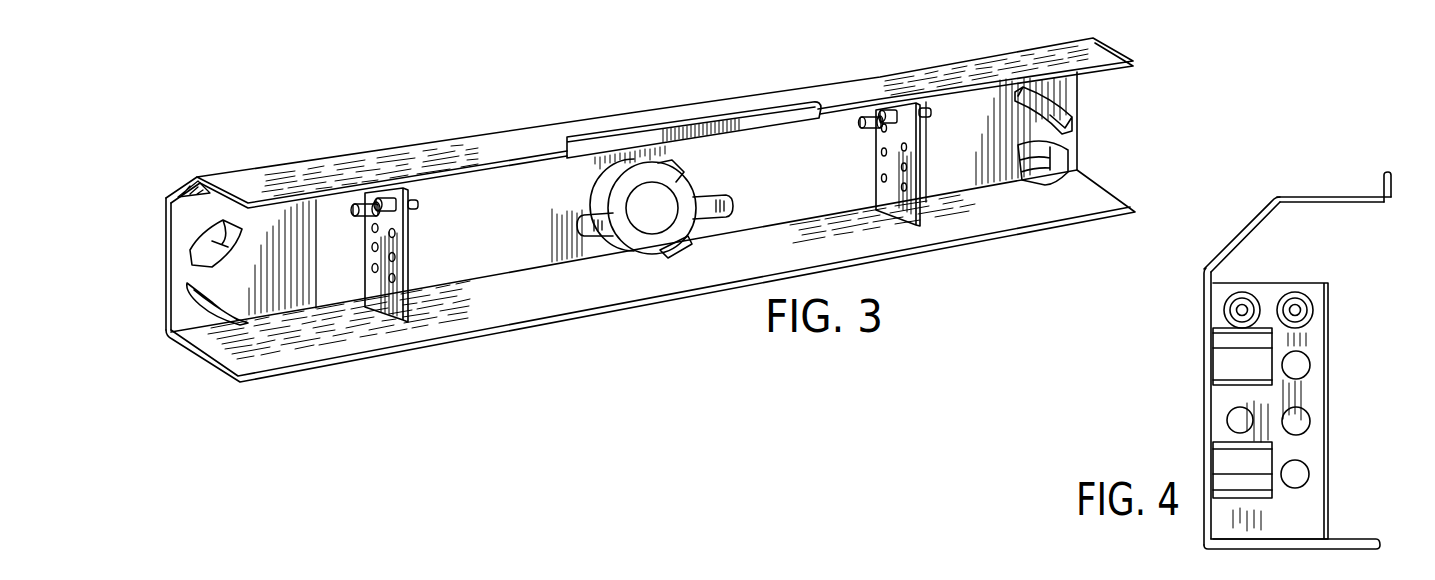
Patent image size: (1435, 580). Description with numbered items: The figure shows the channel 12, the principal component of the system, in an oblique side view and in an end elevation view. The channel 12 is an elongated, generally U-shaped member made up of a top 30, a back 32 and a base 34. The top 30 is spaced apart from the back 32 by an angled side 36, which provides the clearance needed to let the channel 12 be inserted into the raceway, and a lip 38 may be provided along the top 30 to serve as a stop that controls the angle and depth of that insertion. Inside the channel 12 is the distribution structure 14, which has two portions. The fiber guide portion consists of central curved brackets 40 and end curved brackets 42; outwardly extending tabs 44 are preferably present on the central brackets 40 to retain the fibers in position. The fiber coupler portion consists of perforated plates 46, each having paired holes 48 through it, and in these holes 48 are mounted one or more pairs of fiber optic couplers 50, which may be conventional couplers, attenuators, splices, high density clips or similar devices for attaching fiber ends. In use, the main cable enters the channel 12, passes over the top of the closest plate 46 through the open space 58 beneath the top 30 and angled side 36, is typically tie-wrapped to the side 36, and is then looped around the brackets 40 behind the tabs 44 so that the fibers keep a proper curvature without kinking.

In FIG. 3, the channel 12 is at (444, 127).
In FIG. 4, the channel 12 is at (1285, 188).
In FIG. 3, the distribution structure 14 is at (804, 141).
In FIG. 4, the distribution structure 14 is at (1348, 337).
In FIG. 3, the top 30 is at (527, 133).
In FIG. 4, the top 30 is at (1326, 197).
In FIG. 3, the back 32 is at (1070, 90).
In FIG. 4, the back 32 is at (1207, 400).
In FIG. 3, the base 34 is at (1045, 213).
In FIG. 4, the base 34 is at (1343, 554).
In FIG. 3, the angled side 36 is at (182, 185).
In FIG. 4, the angled side 36 is at (1238, 238).
In FIG. 3, the lip 38 is at (640, 131).
In FIG. 4, the lip 38 is at (1396, 178).
In FIG. 3, the central curved brackets 40 is at (583, 191).
In FIG. 3, the end curved brackets 42 is at (220, 297).
In FIG. 4, the end curved brackets 42 is at (1221, 341).
In FIG. 3, the tabs 44 is at (580, 232).
In FIG. 3, the perforated plates 46 is at (397, 290).
In FIG. 4, the perforated plates 46 is at (1313, 498).
In FIG. 3, the paired holes 48 is at (394, 257).
In FIG. 4, the paired holes 48 is at (1309, 416).
In FIG. 3, the fiber optic couplers 50 is at (368, 213).
In FIG. 4, the fiber optic couplers 50 is at (1297, 310).
In FIG. 4, the open space 58 is at (1269, 258).